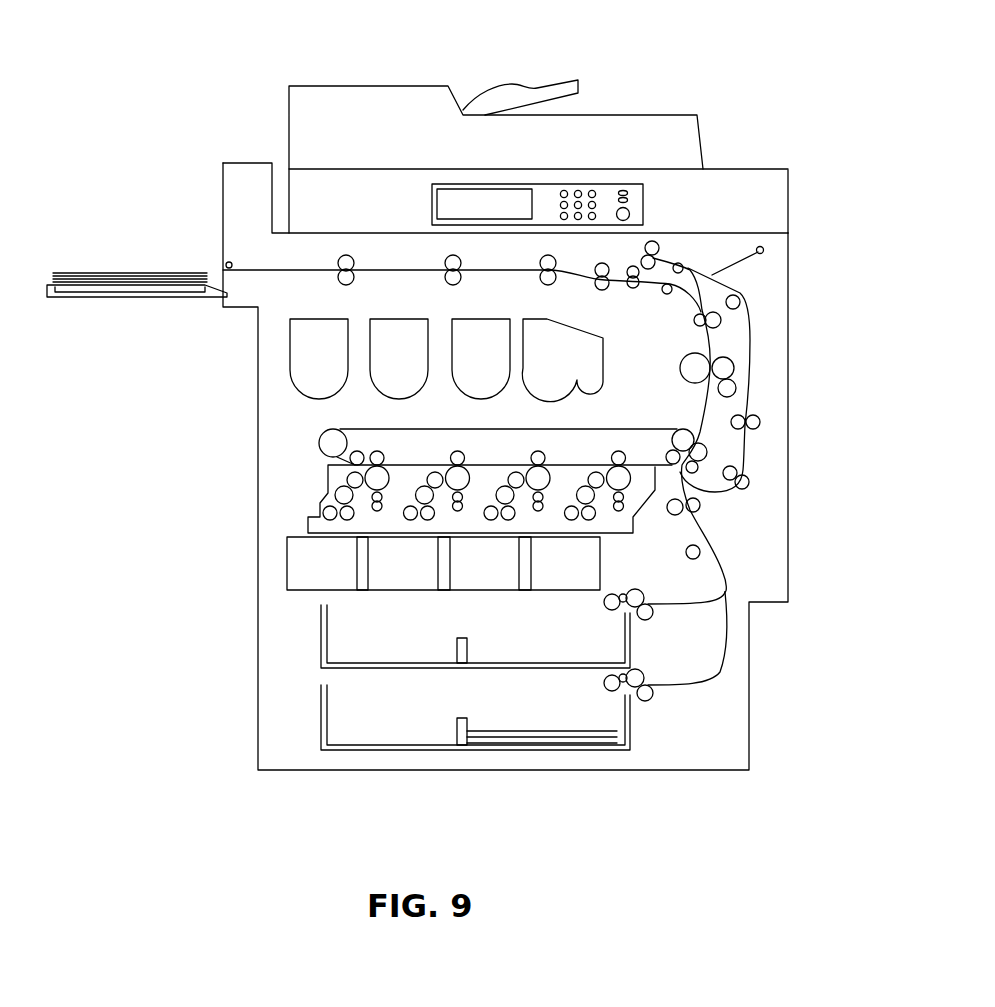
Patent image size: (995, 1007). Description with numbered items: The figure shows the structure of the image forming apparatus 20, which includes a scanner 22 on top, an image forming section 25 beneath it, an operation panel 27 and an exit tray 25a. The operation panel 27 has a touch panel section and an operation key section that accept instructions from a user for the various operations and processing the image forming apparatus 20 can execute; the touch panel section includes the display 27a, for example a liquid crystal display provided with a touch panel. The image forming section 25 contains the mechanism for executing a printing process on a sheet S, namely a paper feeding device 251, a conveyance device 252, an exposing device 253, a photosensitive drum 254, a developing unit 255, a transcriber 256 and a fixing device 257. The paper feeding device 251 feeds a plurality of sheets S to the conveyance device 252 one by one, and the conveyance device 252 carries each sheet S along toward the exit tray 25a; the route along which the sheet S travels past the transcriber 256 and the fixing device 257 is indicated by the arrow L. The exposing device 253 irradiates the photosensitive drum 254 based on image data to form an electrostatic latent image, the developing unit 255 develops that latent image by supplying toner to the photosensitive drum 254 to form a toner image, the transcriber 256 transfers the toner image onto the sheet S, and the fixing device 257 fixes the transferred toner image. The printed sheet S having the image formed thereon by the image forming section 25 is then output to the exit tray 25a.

The image forming apparatus 20 is at (689, 69).
The scanner 22 is at (793, 204).
The image forming section 25 is at (773, 638).
The exit tray 25a is at (147, 294).
The operation panel 27 is at (646, 204).
The display 27a is at (473, 203).
The sheet conveyance path L is at (398, 268).
The paper feeding device 251 is at (309, 672).
The conveyance device 252 is at (729, 548).
The exposing device 253 is at (297, 560).
The photosensitive drum 254 is at (389, 478).
The developing unit 255 is at (356, 479).
The transcriber 256 is at (304, 430).
The fixing device 257 is at (674, 388).
The sheet S is at (497, 730).